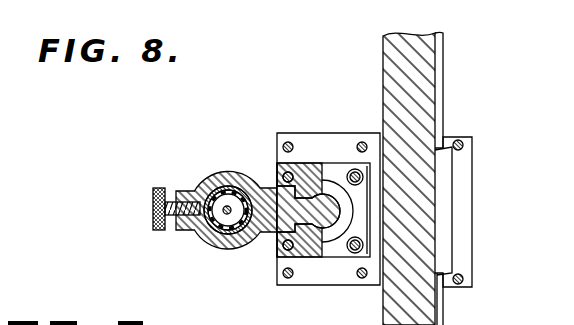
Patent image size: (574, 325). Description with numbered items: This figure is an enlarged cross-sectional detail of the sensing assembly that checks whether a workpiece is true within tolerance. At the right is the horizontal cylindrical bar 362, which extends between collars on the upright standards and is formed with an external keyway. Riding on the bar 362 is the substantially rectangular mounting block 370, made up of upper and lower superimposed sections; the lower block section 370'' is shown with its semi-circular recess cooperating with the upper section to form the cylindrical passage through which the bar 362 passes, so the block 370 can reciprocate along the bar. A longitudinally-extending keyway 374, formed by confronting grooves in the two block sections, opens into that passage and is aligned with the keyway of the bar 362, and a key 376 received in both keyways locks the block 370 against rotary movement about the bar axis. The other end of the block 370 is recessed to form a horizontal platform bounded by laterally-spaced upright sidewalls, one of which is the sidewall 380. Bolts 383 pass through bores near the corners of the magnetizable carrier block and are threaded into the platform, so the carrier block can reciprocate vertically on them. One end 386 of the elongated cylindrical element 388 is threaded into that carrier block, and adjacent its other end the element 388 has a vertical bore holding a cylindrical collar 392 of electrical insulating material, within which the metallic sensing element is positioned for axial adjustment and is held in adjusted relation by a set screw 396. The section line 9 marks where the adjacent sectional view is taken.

The horizontal cylindrical bar 362 is at (383, 47).
The mounting block 370 is at (398, 215).
The lower block section 370'' is at (328, 197).
The keyway 374 is at (441, 324).
The key 376 is at (448, 201).
The upright sidewall 380 is at (338, 254).
The bolts 383 is at (302, 258).
The end of elongated cylindrical element 386 is at (272, 238).
The elongated cylindrical element 388 is at (223, 171).
The cylindrical collar 392 is at (211, 181).
The set screw 396 is at (164, 188).
The section line 9- 9 is at (180, 242).